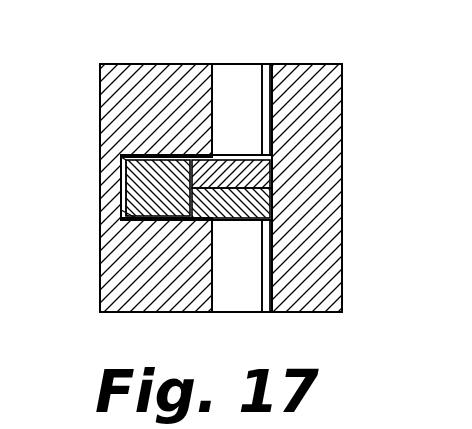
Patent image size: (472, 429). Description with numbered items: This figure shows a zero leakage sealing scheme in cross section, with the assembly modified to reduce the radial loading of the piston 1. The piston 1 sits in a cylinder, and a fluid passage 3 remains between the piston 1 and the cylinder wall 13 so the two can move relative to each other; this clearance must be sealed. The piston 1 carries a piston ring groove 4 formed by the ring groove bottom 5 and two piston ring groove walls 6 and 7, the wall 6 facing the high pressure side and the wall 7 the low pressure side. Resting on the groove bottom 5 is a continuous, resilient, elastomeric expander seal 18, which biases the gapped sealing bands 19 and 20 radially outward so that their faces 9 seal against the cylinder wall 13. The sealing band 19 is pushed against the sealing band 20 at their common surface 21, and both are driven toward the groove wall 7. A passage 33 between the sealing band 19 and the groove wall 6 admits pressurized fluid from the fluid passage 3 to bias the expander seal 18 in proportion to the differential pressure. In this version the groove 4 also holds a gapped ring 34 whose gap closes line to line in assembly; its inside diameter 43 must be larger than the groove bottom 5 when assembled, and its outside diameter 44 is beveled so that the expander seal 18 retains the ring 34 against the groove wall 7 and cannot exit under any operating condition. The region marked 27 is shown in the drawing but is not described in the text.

The piston 1 is at (129, 78).
The fluid passage 3 is at (262, 298).
The piston ring groove 4 is at (119, 154).
The ring groove bottom 5 is at (121, 193).
The piston ring groove wall 6 is at (150, 160).
The piston ring groove wall 7 is at (122, 228).
The faces 9 is at (272, 205).
The cylinder wall 13 is at (336, 125).
The expander seal 18 is at (160, 188).
The sealing band 19 is at (251, 109).
The sealing band 20 is at (249, 266).
The common surface 21 is at (237, 110).
The channel wall 27 is at (237, 266).
The passage 33 is at (156, 188).
The gapped ring 34 is at (126, 164).
The inside diameter 43 is at (137, 218).
The outside diameter 44 is at (166, 265).